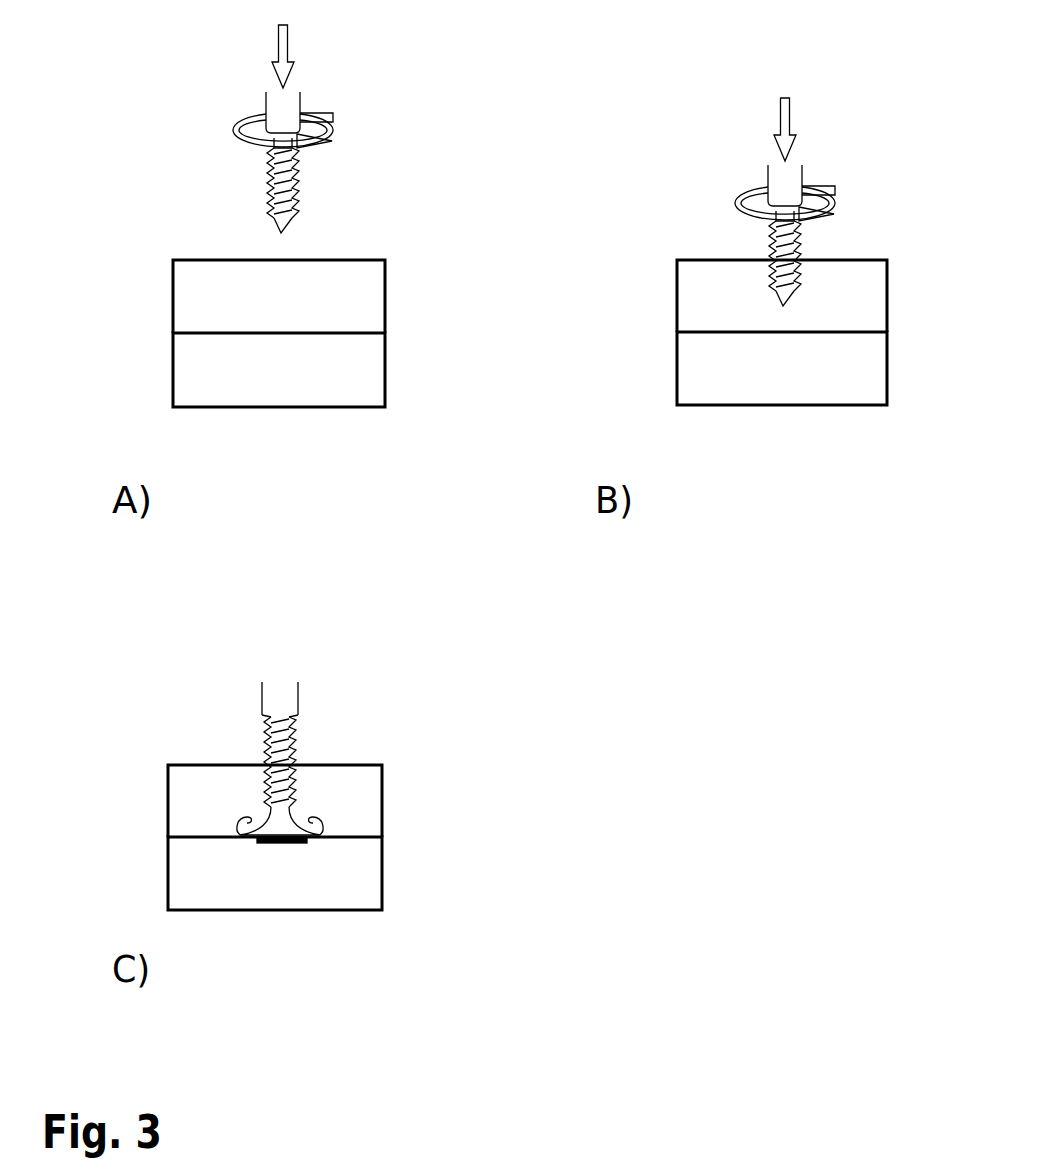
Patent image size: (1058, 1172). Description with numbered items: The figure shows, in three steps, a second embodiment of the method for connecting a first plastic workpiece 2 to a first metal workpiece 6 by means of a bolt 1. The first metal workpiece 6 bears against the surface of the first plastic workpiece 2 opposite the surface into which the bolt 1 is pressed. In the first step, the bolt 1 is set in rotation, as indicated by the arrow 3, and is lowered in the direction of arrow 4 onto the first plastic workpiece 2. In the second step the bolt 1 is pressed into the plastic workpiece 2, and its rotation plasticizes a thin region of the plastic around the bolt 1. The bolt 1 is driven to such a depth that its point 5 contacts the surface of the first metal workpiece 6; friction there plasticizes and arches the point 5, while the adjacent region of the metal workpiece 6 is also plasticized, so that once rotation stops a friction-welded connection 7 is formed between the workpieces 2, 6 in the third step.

The bolt 1 is at (272, 173).
The first plastic workpiece 2 is at (222, 298).
The arrow 3 is at (232, 132).
The arrow 4 is at (282, 50).
The point 5 is at (280, 222).
The first metal workpiece 6 is at (333, 357).
The friction-welded connection 7 is at (265, 838).